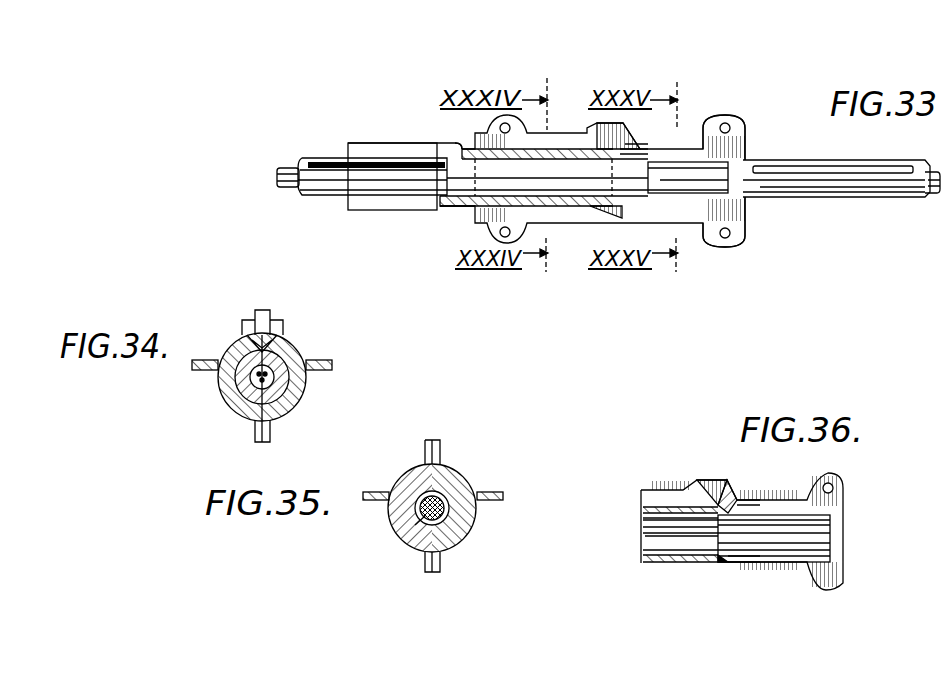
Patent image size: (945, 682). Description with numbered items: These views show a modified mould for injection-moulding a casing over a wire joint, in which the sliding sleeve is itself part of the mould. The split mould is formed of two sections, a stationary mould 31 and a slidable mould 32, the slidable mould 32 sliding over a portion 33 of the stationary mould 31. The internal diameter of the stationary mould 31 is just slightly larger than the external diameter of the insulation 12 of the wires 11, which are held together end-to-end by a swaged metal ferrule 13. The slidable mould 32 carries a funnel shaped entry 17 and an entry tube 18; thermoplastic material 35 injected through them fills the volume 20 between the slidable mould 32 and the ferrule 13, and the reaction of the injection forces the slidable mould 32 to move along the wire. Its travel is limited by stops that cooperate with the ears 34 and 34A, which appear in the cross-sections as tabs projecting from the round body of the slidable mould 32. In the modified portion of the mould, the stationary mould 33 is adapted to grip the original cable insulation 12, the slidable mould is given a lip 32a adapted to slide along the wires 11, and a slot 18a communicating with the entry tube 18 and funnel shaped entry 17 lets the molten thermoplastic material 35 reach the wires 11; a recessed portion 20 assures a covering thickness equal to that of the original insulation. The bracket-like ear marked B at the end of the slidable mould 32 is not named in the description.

In FIG. 33, the wires 11 is at (287, 188).
In FIG. 34, the wires 11 is at (255, 392).
In FIG. 35, the wires 11 is at (420, 508).
In FIG. 36, the wires 11 is at (827, 537).
In FIG. 33, the insulation 12 is at (308, 160).
In FIG. 34, the insulation 12 is at (285, 412).
In FIG. 36, the insulation 12 is at (660, 538).
In FIG. 35, the ferrule 13 is at (415, 525).
In FIG. 33, the funnel shaped entry 17 is at (617, 150).
In FIG. 34, the funnel shaped entry 17 is at (275, 322).
In FIG. 36, the funnel shaped entry 17 is at (722, 492).
In FIG. 33, the entry tube 18 is at (647, 150).
In FIG. 34, the entry tube 18 is at (282, 346).
In FIG. 36, the entry tube 18 is at (718, 510).
In FIG. 36, the slot 18a is at (642, 518).
In FIG. 33, the volume 20 is at (727, 160).
In FIG. 35, the volume 20 is at (445, 520).
In FIG. 36, the volume 20 is at (820, 517).
In FIG. 33, the stationary mould 31 is at (463, 147).
In FIG. 33, the slidable mould 32 is at (553, 140).
In FIG. 34, the slidable mould 32 is at (300, 392).
In FIG. 35, the slidable mould 32 is at (455, 478).
In FIG. 36, the slidable mould 32 is at (663, 497).
In FIG. 36, the lip 32a is at (743, 498).
In FIG. 33, the portion of stationary mould 33 is at (472, 217).
In FIG. 33, the ear 34 is at (370, 167).
In FIG. 34, the ear 34 is at (205, 360).
In FIG. 35, the ear 34 is at (380, 492).
In FIG. 34, the ear 34A is at (332, 362).
In FIG. 35, the ear 34A is at (490, 496).
In FIG. 33, the thermoplastic material 35 is at (617, 218).
In FIG. 36, the thermoplastic material 35 is at (723, 558).
In FIG. 33, the bracket B is at (692, 173).